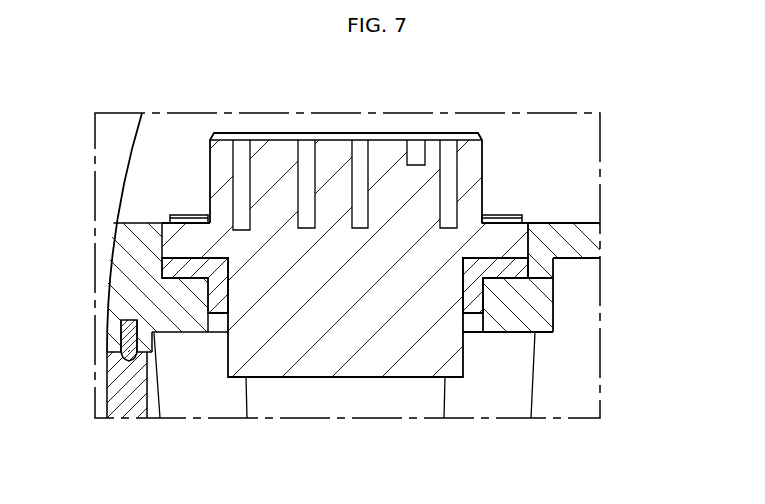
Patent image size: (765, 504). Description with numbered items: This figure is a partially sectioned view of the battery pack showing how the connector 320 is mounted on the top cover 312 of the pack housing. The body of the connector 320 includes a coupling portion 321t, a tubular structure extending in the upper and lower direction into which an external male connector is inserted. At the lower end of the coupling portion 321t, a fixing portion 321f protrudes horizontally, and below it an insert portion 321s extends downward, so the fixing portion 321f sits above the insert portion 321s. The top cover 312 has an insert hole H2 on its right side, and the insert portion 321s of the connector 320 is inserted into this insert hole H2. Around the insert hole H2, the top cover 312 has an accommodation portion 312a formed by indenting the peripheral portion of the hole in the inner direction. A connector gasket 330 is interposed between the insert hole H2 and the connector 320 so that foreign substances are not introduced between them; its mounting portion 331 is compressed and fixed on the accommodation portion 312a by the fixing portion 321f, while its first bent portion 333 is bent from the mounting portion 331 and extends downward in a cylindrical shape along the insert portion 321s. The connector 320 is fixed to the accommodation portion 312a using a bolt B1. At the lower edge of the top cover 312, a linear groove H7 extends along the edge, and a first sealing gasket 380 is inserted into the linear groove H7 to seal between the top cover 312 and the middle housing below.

The connector 320 is at (369, 134).
The coupling portion 321t is at (208, 162).
The fixing portion 321f is at (518, 242).
The insert portion 321s is at (380, 303).
The top cover 312 is at (112, 211).
The accommodation portion 312a is at (171, 266).
The bolt B1 is at (183, 214).
The insert hole H2 is at (218, 323).
The linear groove H7 is at (121, 328).
The first sealing gasket 380 is at (121, 336).
The connector gasket 330 is at (589, 277).
The mounting portion 331 is at (518, 268).
The first bent portion 333 is at (476, 300).